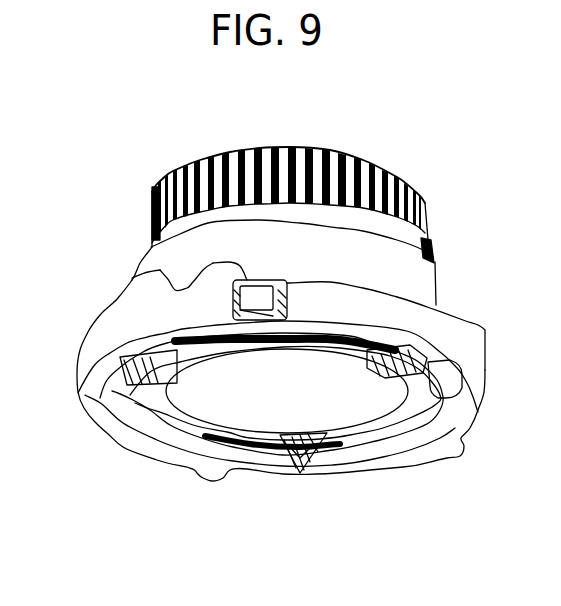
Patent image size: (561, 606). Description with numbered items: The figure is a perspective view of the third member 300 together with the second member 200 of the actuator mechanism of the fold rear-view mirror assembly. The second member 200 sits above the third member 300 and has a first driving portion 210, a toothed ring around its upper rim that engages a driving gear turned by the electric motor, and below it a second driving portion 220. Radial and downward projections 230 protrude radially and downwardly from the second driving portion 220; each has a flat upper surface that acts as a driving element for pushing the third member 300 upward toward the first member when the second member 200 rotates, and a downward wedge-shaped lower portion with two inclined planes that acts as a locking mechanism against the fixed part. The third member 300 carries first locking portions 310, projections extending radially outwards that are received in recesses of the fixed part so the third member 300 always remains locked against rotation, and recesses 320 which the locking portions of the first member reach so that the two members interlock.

The second member 200 is at (124, 232).
The first driving portion 210 is at (157, 187).
The second driving portion 220 is at (137, 275).
The radial and downward projections 230 is at (297, 477).
The third member 300 is at (110, 460).
The first locking portions 310 is at (252, 297).
The recesses 320 is at (188, 273).